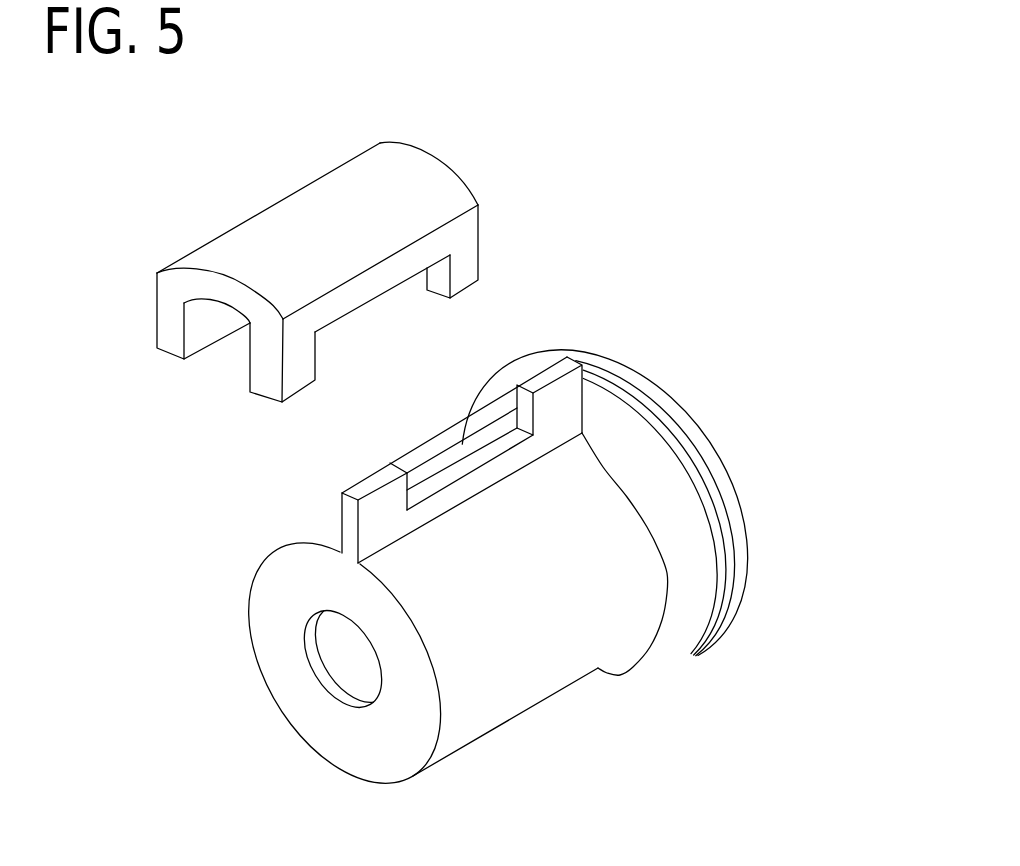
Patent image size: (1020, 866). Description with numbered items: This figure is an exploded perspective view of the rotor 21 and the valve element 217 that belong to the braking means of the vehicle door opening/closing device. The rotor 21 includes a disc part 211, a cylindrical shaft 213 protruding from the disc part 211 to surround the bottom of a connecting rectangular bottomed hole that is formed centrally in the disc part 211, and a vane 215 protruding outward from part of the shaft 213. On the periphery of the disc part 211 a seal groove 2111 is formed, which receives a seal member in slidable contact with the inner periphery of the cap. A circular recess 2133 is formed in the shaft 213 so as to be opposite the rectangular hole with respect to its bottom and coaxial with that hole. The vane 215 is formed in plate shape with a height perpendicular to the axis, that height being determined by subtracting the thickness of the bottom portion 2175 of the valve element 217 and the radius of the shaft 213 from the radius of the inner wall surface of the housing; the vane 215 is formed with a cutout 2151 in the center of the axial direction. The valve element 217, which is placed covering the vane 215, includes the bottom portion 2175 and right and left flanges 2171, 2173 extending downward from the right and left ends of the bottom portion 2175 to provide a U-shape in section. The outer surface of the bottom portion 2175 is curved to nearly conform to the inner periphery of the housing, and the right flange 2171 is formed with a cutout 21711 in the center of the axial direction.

The rotor 21 is at (668, 353).
The disc part 211 is at (747, 508).
The seal groove 2111 is at (693, 440).
The cylindrical shaft 213 is at (540, 707).
The recess 2133 is at (338, 658).
The vane 215 is at (341, 513).
The cutout 2151 is at (452, 473).
The valve element 217 is at (290, 190).
The right flange 2171 is at (480, 258).
The left flange 2173 is at (155, 307).
The bottom portion 2175 is at (217, 307).
The cutout 21711 is at (377, 300).